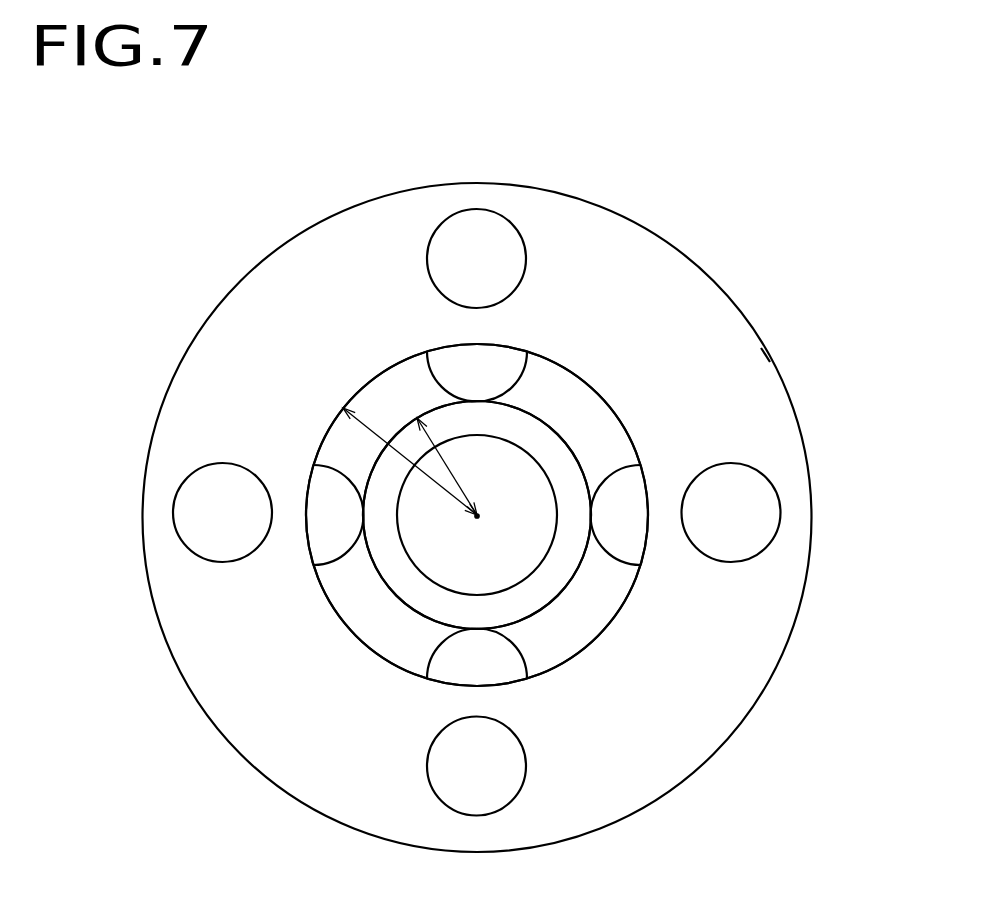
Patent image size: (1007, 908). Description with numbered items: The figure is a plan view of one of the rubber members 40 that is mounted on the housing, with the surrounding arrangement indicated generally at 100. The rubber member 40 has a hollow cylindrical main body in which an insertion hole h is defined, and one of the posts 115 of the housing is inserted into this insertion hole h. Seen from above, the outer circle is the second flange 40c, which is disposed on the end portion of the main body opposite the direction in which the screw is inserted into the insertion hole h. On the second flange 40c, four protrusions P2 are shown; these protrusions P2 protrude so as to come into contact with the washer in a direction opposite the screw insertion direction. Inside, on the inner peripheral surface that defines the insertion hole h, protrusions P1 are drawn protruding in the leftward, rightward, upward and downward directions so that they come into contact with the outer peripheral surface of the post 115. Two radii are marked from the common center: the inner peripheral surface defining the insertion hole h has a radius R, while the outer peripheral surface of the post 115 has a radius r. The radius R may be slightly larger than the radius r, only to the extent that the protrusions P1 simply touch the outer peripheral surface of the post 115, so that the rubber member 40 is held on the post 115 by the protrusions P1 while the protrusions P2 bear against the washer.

The rotor / rotary assembly 100 is at (637, 173).
The rubber member 40 is at (717, 280).
The second flange 40c is at (753, 355).
The post 115 is at (525, 428).
The insertion hole h is at (385, 382).
The radius of the inner peripheral surface R is at (410, 461).
The radius of the outer peripheral surface of the post r is at (447, 466).
The protrusions P1 is at (463, 360).
The protrusions P2 is at (469, 229).